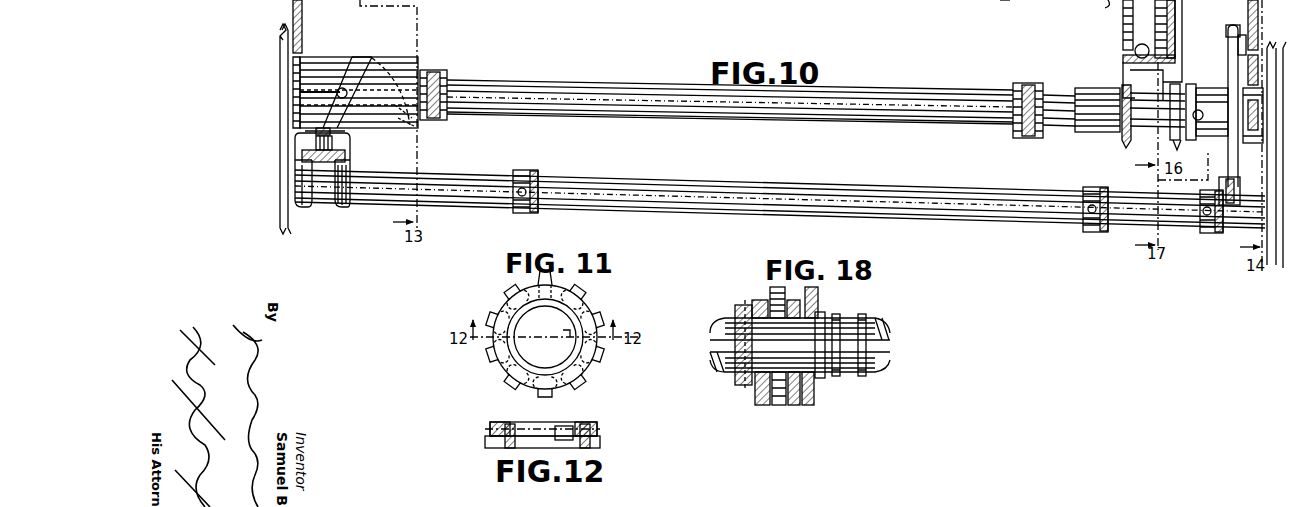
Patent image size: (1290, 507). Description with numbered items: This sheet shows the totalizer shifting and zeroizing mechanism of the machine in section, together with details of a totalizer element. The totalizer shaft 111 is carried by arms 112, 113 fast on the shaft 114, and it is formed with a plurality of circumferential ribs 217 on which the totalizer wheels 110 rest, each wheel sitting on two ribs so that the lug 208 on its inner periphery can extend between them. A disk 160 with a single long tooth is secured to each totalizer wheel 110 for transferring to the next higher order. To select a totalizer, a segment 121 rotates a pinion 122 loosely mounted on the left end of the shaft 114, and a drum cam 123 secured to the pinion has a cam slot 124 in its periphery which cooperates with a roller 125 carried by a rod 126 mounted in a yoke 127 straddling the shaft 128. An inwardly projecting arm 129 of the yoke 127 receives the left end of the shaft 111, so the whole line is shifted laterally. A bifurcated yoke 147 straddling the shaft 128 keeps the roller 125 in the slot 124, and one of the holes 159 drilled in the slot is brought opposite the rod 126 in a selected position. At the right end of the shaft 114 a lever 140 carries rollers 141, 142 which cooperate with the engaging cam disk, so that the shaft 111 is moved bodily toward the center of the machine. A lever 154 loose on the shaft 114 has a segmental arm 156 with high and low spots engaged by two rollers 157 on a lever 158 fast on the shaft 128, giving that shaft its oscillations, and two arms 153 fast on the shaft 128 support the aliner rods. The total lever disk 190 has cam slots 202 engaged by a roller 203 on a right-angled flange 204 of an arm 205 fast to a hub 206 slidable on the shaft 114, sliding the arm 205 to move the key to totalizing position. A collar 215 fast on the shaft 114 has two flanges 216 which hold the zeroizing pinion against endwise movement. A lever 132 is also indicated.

In FIG. 11, the totalizer wheel 110 is at (582, 300).
In FIG. 12, the totalizer wheel 110 is at (600, 443).
In FIG. 18, the totalizer wheel 110 is at (780, 406).
In FIG. 18, the totalizer shaft 111 is at (880, 330).
In FIG. 10, the arm 112 is at (447, 74).
In FIG. 10, the arm 113 is at (1043, 88).
In FIG. 10, the shaft 114 is at (660, 117).
In FIG. 10, the segment 121 is at (304, 30).
In FIG. 10, the pinion 122 is at (292, 62).
In FIG. 10, the drum cam 123 is at (408, 58).
In FIG. 10, the cam slot 124 is at (365, 48).
In FIG. 10, the roller 125 is at (335, 133).
In FIG. 10, the rod 126 is at (332, 143).
In FIG. 10, the yoke 127 is at (345, 178).
In FIG. 10, the shaft 128 is at (470, 206).
In FIG. 10, the arm 129 is at (302, 156).
In FIG. 10, the lever 132 is at (1002, 5).
In FIG. 10, the lever 140 is at (1232, 50).
In FIG. 10, the roller 141 is at (1252, 143).
In FIG. 10, the roller 142 is at (1248, 72).
In FIG. 10, the yoke 147 is at (295, 140).
In FIG. 10, the arm 153 is at (528, 214).
In FIG. 10, the lever 154 is at (1228, 34).
In FIG. 10, the segmental arm 156 is at (1236, 165).
In FIG. 10, the roller 157 is at (1238, 190).
In FIG. 10, the lever 158 is at (1212, 233).
In FIG. 10, the hole 159 is at (325, 90).
In FIG. 11, the disk 160 is at (588, 370).
In FIG. 12, the disk 160 is at (597, 428).
In FIG. 18, the disk 160 is at (778, 288).
In FIG. 10, the total lever disk 190 is at (1178, 14).
In FIG. 10, the cam slot 202 is at (1123, 30).
In FIG. 10, the roller 203 is at (1135, 52).
In FIG. 10, the right-angled flange 204 is at (1138, 72).
In FIG. 10, the arm 205 is at (1129, 141).
In FIG. 10, the hub 206 is at (1108, 124).
In FIG. 11, the lug 208 is at (566, 330).
In FIG. 12, the lug 208 is at (568, 426).
In FIG. 18, the lug 208 is at (812, 382).
In FIG. 10, the collar 215 is at (1192, 90).
In FIG. 10, the flange 216 is at (1180, 146).
In FIG. 18, the circumferential rib 217 is at (862, 314).